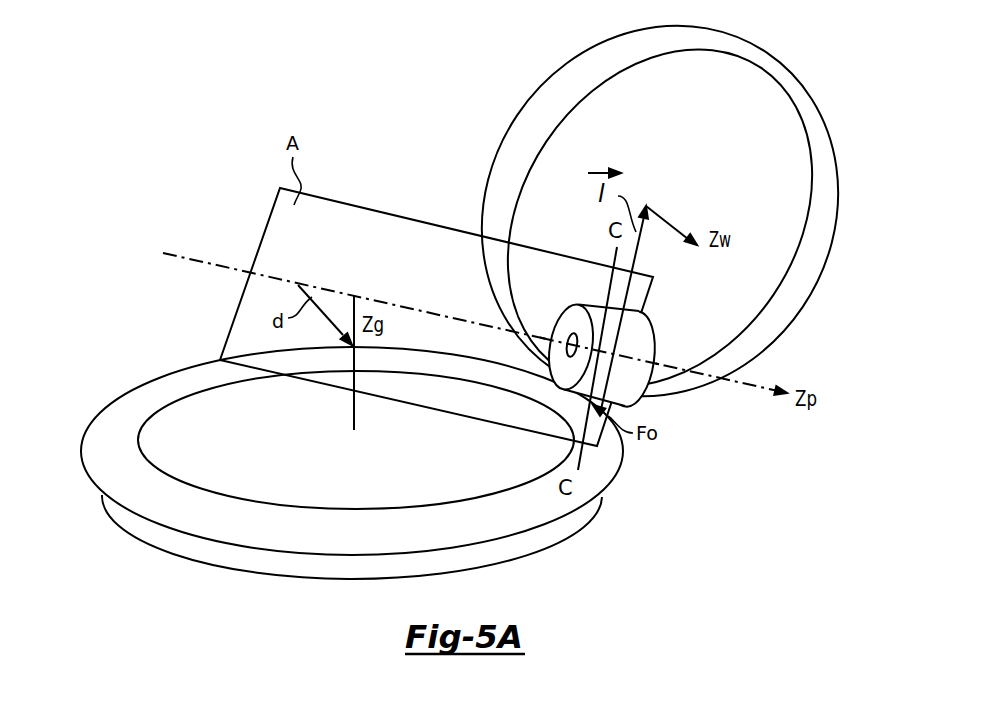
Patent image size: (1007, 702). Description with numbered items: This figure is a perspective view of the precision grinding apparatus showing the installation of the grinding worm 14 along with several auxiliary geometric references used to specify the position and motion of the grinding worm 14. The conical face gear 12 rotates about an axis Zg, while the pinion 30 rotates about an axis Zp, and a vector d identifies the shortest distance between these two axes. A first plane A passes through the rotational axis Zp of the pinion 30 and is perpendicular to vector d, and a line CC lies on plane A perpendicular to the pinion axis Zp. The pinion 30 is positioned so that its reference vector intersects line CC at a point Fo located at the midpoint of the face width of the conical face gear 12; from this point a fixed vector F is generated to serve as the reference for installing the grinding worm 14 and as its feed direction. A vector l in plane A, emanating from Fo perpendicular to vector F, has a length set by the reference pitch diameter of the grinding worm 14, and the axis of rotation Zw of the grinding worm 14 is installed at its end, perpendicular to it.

The conical face gear 12 is at (600, 532).
The grinding worm 14 is at (800, 48).
The pinion 30 is at (668, 322).